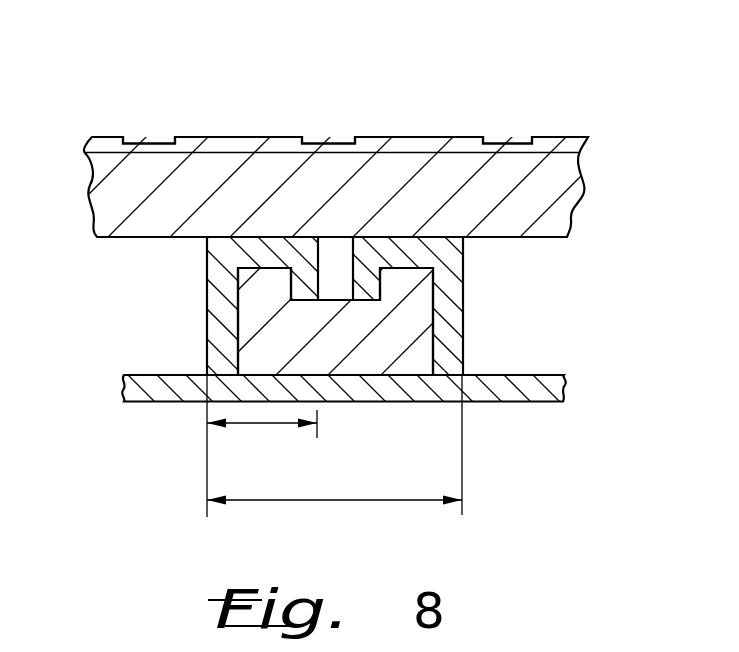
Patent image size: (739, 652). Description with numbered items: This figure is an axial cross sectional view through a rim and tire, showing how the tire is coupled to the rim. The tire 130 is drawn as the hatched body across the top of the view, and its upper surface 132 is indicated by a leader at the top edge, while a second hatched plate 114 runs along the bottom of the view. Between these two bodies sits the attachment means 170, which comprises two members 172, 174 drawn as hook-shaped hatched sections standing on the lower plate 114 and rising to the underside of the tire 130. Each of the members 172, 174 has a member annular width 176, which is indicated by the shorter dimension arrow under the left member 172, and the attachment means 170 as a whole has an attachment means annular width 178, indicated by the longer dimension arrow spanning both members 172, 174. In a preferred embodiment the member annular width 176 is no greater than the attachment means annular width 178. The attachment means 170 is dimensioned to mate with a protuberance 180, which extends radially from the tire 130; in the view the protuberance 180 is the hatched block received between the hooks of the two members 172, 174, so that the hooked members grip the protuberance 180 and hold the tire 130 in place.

The tire 130 is at (313, 225).
The patterned top surface 132 is at (227, 143).
The base layer 114 is at (124, 386).
The attachment means 170 is at (349, 292).
The member 172 is at (205, 305).
The member 174 is at (464, 339).
The member annular width 176 is at (272, 424).
The attachment means annular width 178 is at (335, 501).
The protuberance 180 is at (377, 352).